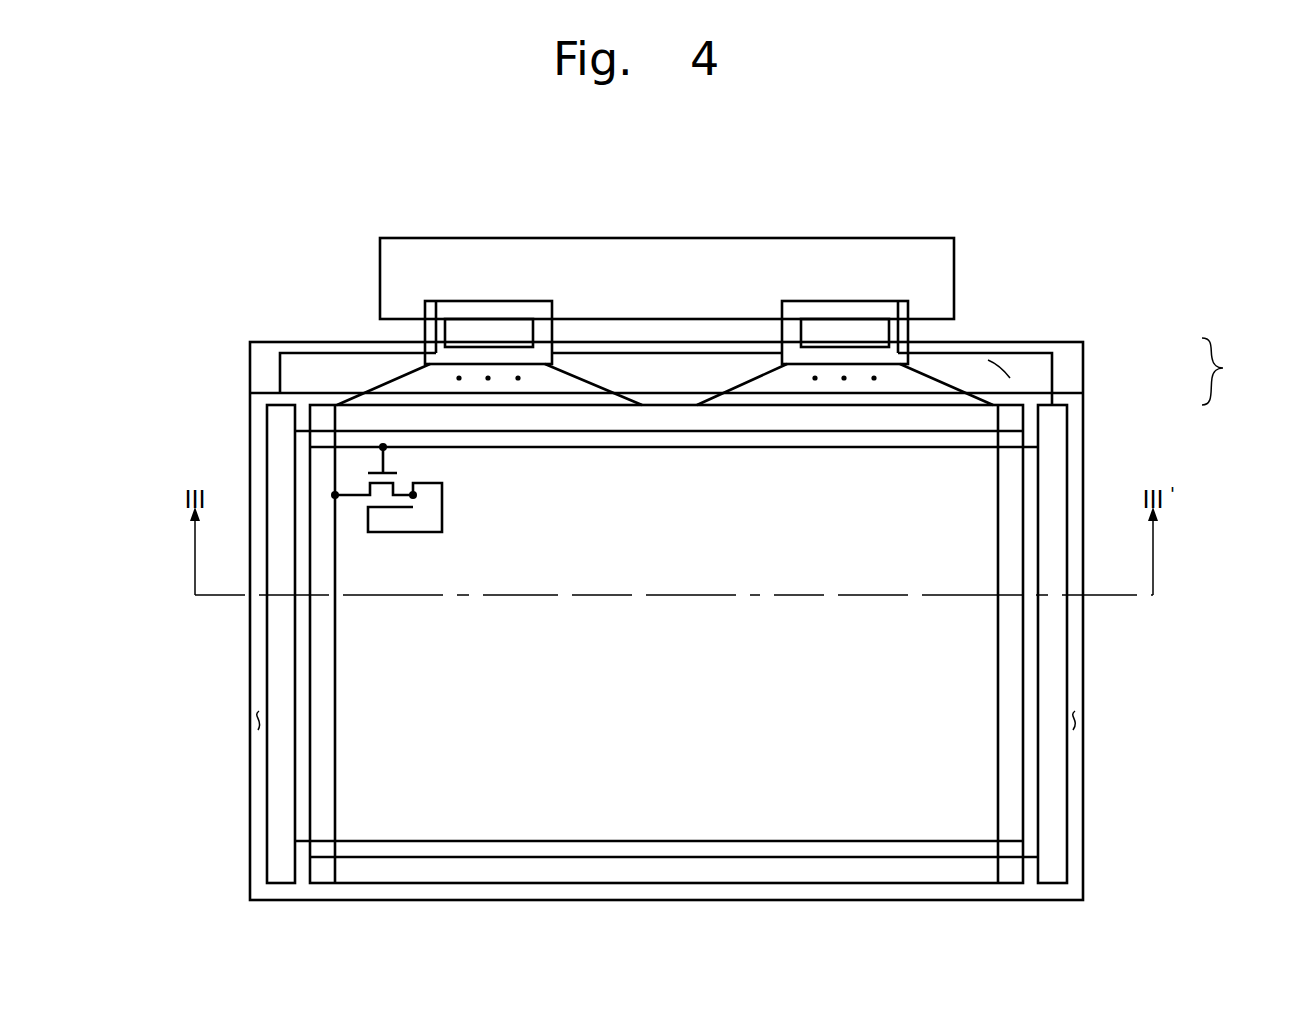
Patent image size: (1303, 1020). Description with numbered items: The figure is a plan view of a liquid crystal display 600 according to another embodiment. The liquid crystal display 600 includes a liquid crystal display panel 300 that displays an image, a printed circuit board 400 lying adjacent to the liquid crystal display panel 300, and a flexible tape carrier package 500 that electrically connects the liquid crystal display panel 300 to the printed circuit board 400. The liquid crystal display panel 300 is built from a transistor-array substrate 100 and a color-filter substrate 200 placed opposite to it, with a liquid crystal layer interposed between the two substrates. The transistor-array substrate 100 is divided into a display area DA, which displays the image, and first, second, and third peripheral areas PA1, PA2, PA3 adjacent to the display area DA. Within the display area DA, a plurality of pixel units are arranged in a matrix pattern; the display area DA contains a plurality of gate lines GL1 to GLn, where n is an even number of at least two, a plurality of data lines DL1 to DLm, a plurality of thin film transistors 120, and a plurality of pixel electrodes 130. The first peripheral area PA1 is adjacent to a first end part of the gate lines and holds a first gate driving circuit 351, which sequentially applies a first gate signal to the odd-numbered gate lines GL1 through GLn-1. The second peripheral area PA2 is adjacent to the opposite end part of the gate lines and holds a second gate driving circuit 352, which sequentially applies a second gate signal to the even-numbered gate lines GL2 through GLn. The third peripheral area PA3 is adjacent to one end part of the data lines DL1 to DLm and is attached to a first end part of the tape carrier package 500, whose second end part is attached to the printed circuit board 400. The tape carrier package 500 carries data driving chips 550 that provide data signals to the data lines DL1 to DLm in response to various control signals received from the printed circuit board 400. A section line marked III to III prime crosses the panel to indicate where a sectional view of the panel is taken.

The liquid crystal display 600 is at (956, 163).
The printed circuit board 400 is at (953, 277).
The flexible tape carrier package 500 is at (908, 328).
The data driving chip 550 is at (848, 318).
The transistor-array substrate 100 is at (1084, 360).
The color-filter substrate 200 is at (1067, 388).
The liquid crystal display panel 300 is at (1236, 371).
The first gate driving circuit 351 is at (265, 660).
The second gate driving circuit 352 is at (1068, 642).
The thin film transistor 120 is at (406, 473).
The pixel electrode 130 is at (442, 510).
The display area DA is at (963, 768).
The first peripheral area PA1 is at (258, 722).
The second peripheral area PA2 is at (1077, 722).
The third peripheral area PA3 is at (1000, 368).
The first gate line GL1 is at (658, 432).
The second gate line GL2 is at (756, 450).
The (n-1)th gate line GLn-1 is at (762, 840).
The nth gate line GLn is at (658, 857).
The first data line DL1 is at (337, 643).
The mth data line DLm is at (998, 647).